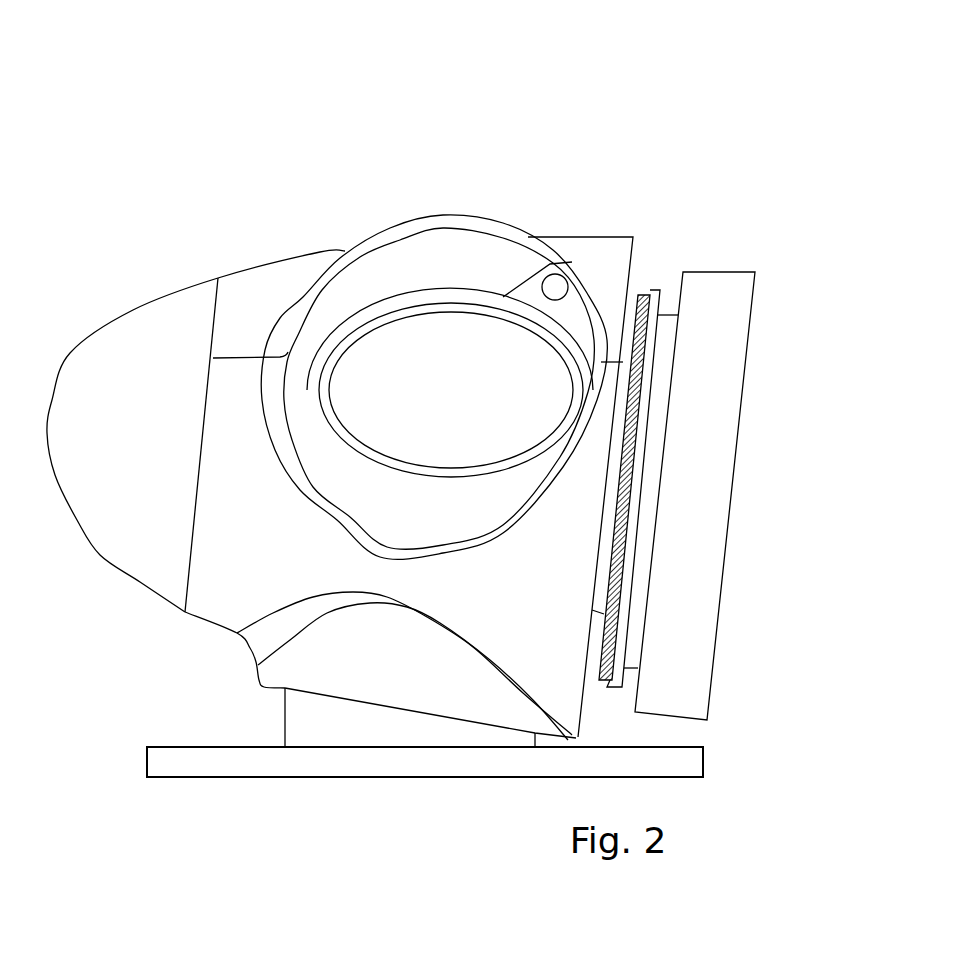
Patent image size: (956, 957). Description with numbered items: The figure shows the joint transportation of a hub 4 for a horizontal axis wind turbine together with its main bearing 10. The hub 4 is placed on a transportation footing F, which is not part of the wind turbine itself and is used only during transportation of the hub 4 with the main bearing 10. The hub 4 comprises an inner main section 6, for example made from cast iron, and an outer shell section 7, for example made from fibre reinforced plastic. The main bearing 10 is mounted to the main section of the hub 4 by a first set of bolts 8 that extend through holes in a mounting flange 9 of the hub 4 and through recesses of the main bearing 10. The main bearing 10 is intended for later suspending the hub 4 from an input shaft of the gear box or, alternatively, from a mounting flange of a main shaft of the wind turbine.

The hub 4 is at (173, 236).
The inner main section 6 is at (460, 295).
The outer shell section 7 is at (257, 308).
The first set of bolts 8 is at (640, 297).
The mounting flange 9 is at (660, 305).
The main bearing 10 is at (730, 297).
The transportation footing F is at (233, 763).